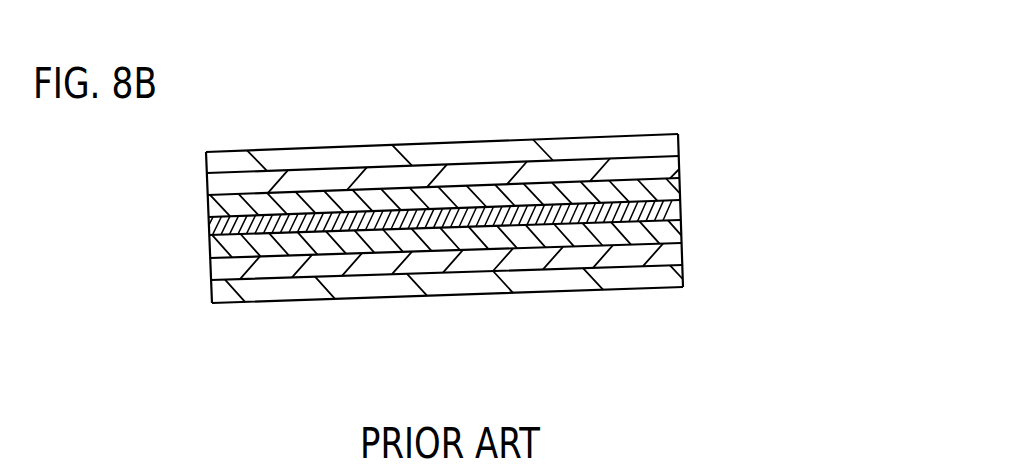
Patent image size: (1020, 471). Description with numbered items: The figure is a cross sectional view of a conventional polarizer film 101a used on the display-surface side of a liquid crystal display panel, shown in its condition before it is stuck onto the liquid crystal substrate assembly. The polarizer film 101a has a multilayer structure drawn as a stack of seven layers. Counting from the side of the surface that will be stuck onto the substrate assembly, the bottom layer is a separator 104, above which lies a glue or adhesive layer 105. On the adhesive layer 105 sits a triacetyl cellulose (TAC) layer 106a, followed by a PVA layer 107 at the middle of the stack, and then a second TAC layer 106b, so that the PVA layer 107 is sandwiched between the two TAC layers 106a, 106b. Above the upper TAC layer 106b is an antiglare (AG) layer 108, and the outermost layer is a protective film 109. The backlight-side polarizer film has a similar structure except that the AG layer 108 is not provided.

The polarizer film 101a is at (753, 46).
The protective film 109 is at (672, 145).
The antiglare (AG) layer 108 is at (672, 163).
The TAC layer 106b is at (672, 186).
The PVA layer 107 is at (672, 209).
The triacetyl cellulose (TAC) layer 106a is at (672, 232).
The glue or adhesive layer 105 is at (672, 255).
The separator 104 is at (672, 277).